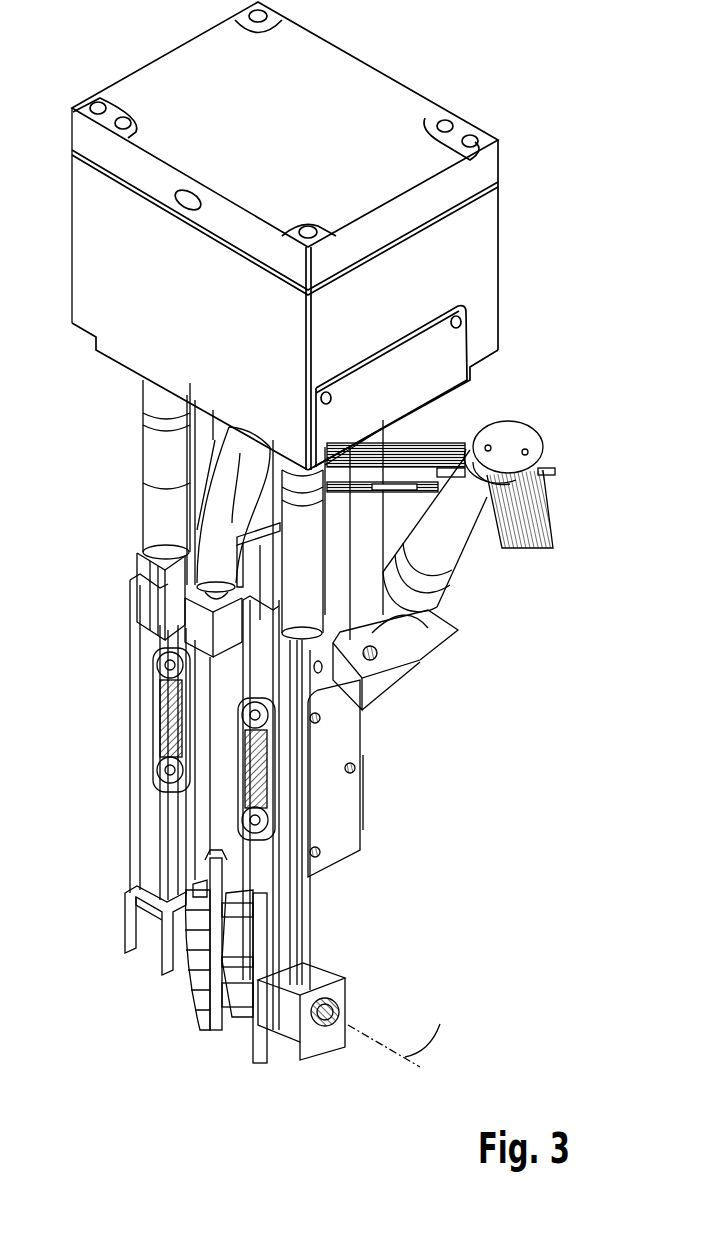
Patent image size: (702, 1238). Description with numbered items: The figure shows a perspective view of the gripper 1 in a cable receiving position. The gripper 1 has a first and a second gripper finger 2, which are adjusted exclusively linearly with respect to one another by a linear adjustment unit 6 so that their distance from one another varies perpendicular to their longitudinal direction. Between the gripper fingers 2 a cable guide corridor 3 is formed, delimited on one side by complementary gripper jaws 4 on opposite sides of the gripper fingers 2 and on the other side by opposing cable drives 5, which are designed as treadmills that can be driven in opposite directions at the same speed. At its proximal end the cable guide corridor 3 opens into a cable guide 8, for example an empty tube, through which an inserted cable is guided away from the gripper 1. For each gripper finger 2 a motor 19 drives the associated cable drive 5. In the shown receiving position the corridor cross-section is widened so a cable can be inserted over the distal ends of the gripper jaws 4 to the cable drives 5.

The gripper 1 is at (90, 61).
The gripper finger 2 is at (160, 503).
The cable guide corridor 3 is at (218, 833).
The gripper jaw 4 is at (193, 1010).
The cable drive 5 is at (163, 717).
The linear adjustment unit 6 is at (360, 82).
The cable guide 8 is at (215, 535).
The motor 19 is at (462, 553).